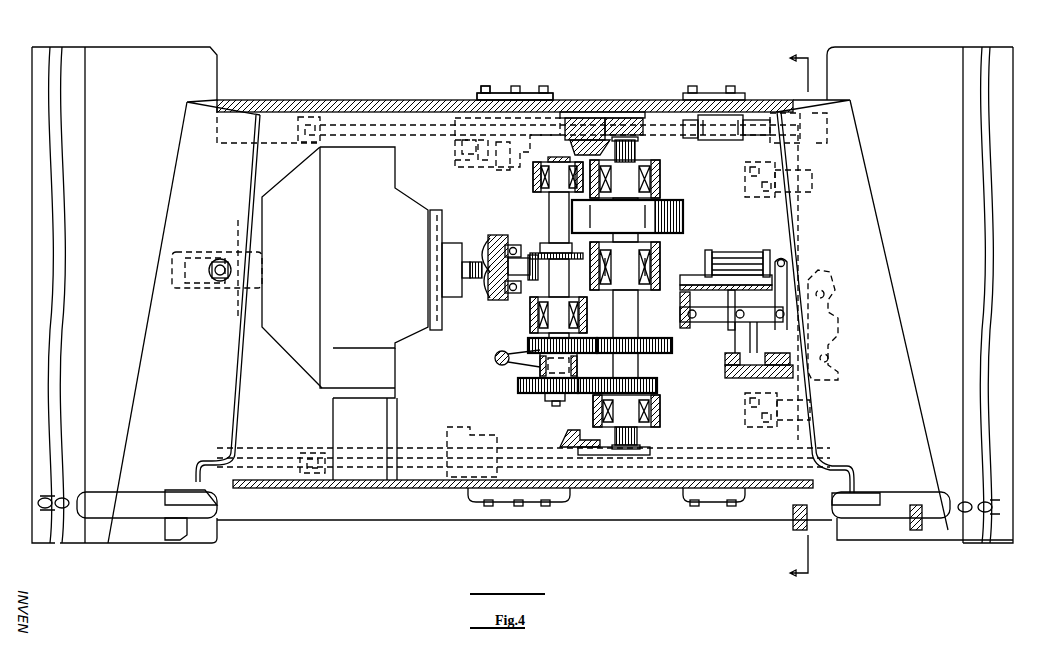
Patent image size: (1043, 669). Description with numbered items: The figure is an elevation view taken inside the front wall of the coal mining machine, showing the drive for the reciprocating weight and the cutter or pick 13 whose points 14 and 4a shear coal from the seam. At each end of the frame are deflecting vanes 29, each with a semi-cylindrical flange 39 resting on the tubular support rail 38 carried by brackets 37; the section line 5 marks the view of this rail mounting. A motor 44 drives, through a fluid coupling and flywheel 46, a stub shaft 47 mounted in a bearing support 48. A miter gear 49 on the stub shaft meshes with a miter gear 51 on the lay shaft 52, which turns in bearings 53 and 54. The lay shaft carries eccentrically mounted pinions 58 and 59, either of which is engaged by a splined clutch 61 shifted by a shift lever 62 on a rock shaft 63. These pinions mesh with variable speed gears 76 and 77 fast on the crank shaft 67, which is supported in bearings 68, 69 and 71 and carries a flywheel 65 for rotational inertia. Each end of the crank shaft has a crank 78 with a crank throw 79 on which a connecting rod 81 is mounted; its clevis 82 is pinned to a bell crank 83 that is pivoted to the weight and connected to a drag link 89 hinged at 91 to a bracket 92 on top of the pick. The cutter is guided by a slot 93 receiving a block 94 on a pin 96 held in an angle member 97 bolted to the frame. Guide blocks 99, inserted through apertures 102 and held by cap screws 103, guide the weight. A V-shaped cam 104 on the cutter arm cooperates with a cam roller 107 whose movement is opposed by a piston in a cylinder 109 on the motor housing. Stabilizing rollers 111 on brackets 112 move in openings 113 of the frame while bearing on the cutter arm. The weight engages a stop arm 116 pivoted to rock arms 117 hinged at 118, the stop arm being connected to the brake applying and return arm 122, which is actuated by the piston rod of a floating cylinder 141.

The frame side member 4a is at (32, 338).
The cutter 13 is at (218, 68).
The point 14 is at (1004, 312).
The deflecting vane 29 is at (133, 360).
The bracket 37 is at (916, 531).
The tubular support rail 38 is at (896, 500).
The semi-cylindrical flange 39 is at (868, 493).
The motor 44 is at (278, 279).
The fluid coupling and flywheel 46 is at (505, 236).
The stub shaft 47 is at (527, 282).
The bearing support 48 is at (492, 302).
The miter gear 49 is at (541, 252).
The miter gear 51 is at (564, 260).
The lay shaft 52 is at (515, 244).
The bearing 53 is at (555, 235).
The bearing 54 is at (586, 320).
The eccentrically mounted pinion 58 is at (530, 344).
The eccentrically mounted pinion 59 is at (529, 394).
The splined clutch 61 is at (540, 372).
The shift lever 62 is at (505, 363).
The rock shaft 63 is at (495, 357).
The flywheel 65 is at (684, 218).
The crank shaft 67 is at (639, 321).
The bearing 68 is at (653, 188).
The bearing 69 is at (653, 256).
The bearing 71 is at (661, 419).
The variable speed gear 76 is at (672, 350).
The variable speed gear 77 is at (658, 385).
The crank 78 is at (568, 146).
The crank throw 79 is at (594, 115).
The connecting rod 81 is at (631, 138).
The clevis 82 is at (730, 127).
The bell crank 83 is at (756, 122).
The drag link 89 is at (412, 96).
The hinge connection 91 is at (280, 142).
The bracket 92 is at (294, 115).
The slot 93 is at (512, 172).
The block 94 is at (480, 165).
The pin 96 is at (450, 160).
The angle member 97 is at (436, 146).
The guide block 99 is at (550, 96).
The aperture 102 is at (483, 107).
The cap screw 103 is at (487, 86).
The V-shaped cam 104 is at (202, 252).
The cam roller 107 is at (258, 240).
The cylinder 109 is at (220, 258).
The stabilizing roller 111 is at (752, 200).
The bracket 112 is at (765, 200).
The opening 113 is at (746, 187).
The stop arm 116 is at (820, 286).
The rock arm 117 is at (735, 338).
The hinge connection 118 is at (735, 355).
The brake applying and return arm 122 is at (784, 275).
The floating cylinder 141 is at (728, 255).
The section line 5- 5 is at (790, 315).